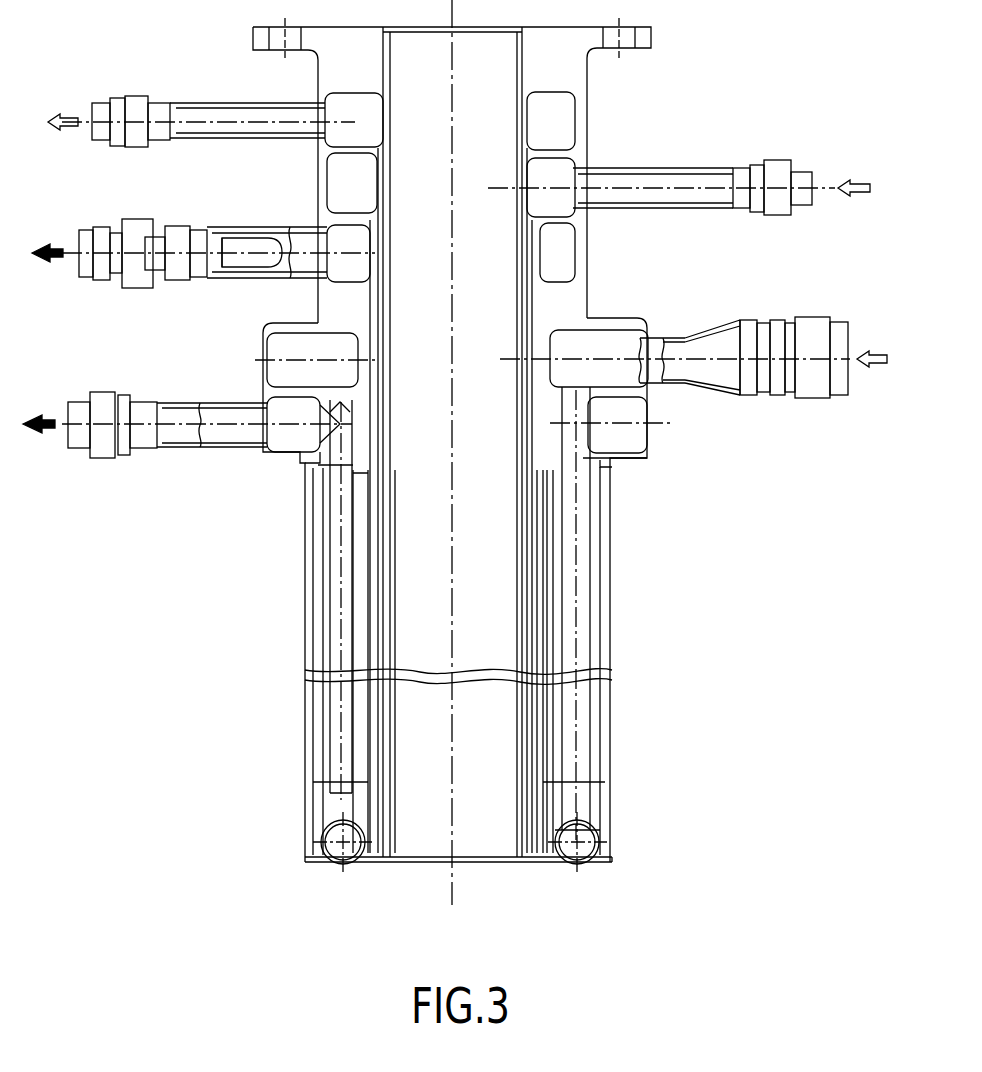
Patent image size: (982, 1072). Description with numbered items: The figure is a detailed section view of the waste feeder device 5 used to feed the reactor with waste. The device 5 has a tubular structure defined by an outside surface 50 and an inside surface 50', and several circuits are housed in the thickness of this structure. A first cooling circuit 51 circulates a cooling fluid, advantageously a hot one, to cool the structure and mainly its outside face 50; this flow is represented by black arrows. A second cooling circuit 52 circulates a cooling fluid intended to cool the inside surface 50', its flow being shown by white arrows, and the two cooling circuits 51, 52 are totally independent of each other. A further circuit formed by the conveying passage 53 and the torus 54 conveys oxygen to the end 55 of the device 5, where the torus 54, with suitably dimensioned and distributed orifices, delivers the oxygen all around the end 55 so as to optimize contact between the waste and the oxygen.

The waste feeder device 5 is at (620, 93).
The outside surface 50 is at (505, 664).
The inside surface 50' is at (453, 690).
The cooling fluid circuit 51 is at (336, 595).
The cooling fluid circuit 52 is at (387, 855).
The oxygen conveying circuit 53 is at (578, 515).
The torus 54 is at (592, 836).
The end of the device 55 is at (500, 865).